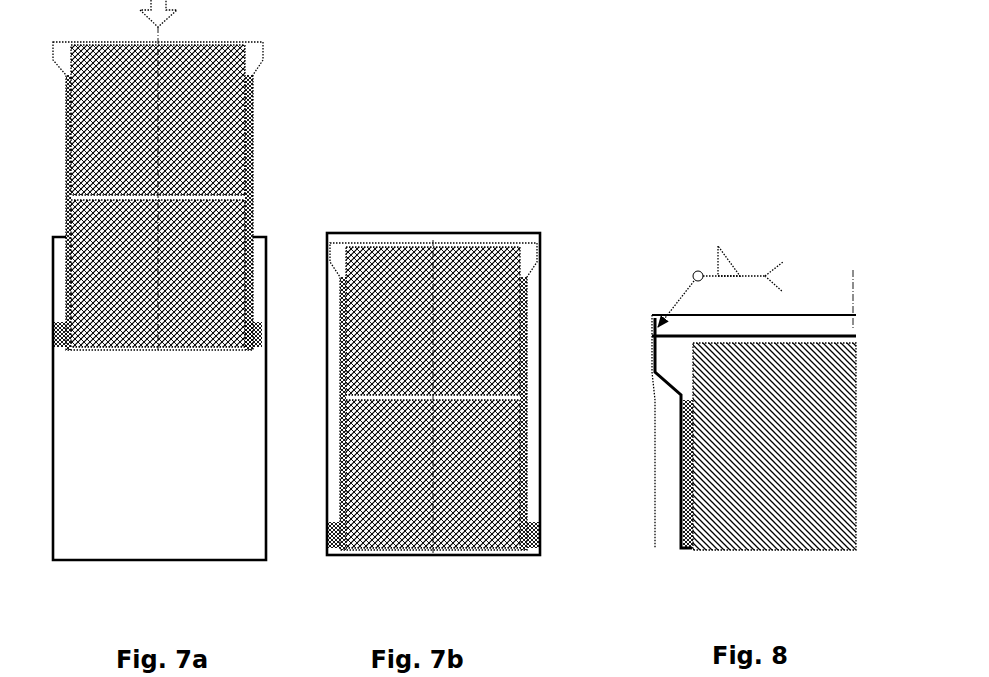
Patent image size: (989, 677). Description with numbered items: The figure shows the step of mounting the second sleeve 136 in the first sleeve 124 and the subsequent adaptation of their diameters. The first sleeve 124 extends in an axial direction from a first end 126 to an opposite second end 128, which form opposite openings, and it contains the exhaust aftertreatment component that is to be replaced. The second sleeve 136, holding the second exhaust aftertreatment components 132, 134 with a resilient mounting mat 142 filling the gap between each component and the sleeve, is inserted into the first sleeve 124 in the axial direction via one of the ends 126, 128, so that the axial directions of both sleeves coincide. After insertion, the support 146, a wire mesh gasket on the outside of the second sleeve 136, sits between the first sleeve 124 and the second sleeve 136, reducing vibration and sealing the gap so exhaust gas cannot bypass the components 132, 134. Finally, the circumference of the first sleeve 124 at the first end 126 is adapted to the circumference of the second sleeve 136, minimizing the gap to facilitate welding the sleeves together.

In FIG. 7A, the first sleeve 124 is at (272, 283).
In FIG. 7B, the first sleeve 124 is at (372, 230).
In FIG. 8, the first sleeve 124 is at (655, 458).
In FIG. 7A, the first end 126 is at (266, 237).
In FIG. 8, the first end 126 is at (652, 318).
In FIG. 7A, the second end 128 is at (266, 560).
In FIG. 7A, the second exhaust aftertreatment component 132 is at (205, 63).
In FIG. 7B, the second exhaust aftertreatment component 132 is at (498, 278).
In FIG. 7B, the second exhaust aftertreatment component 134 is at (397, 490).
In FIG. 7A, the second sleeve 136 is at (262, 115).
In FIG. 7B, the second sleeve 136 is at (474, 287).
In FIG. 8, the second sleeve 136 is at (679, 550).
In FIG. 8, the mounting mat 142 is at (687, 550).
In FIG. 7B, the support 146 is at (537, 533).